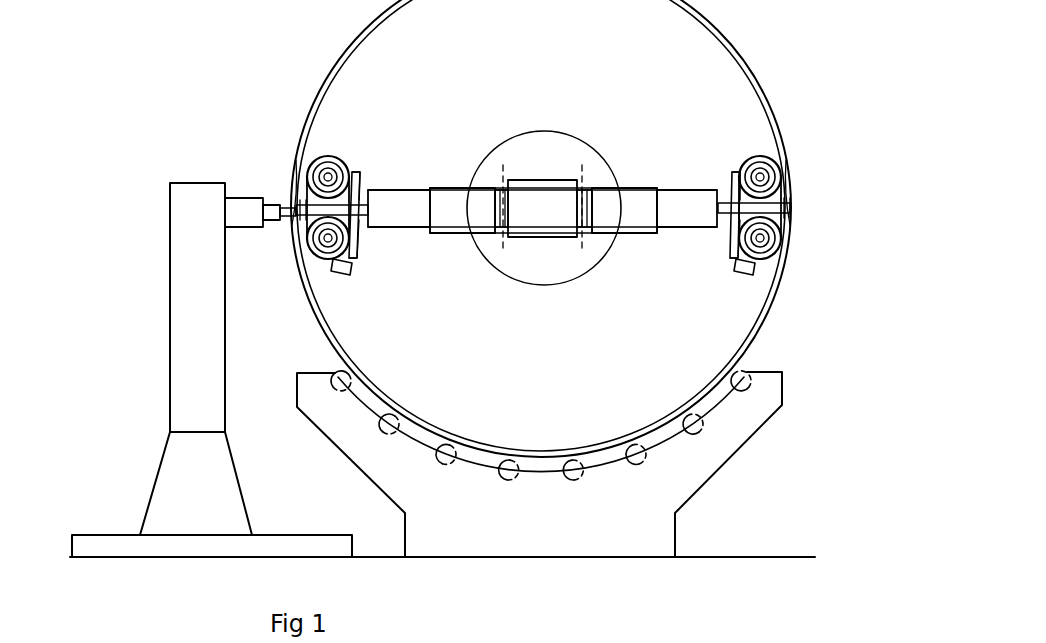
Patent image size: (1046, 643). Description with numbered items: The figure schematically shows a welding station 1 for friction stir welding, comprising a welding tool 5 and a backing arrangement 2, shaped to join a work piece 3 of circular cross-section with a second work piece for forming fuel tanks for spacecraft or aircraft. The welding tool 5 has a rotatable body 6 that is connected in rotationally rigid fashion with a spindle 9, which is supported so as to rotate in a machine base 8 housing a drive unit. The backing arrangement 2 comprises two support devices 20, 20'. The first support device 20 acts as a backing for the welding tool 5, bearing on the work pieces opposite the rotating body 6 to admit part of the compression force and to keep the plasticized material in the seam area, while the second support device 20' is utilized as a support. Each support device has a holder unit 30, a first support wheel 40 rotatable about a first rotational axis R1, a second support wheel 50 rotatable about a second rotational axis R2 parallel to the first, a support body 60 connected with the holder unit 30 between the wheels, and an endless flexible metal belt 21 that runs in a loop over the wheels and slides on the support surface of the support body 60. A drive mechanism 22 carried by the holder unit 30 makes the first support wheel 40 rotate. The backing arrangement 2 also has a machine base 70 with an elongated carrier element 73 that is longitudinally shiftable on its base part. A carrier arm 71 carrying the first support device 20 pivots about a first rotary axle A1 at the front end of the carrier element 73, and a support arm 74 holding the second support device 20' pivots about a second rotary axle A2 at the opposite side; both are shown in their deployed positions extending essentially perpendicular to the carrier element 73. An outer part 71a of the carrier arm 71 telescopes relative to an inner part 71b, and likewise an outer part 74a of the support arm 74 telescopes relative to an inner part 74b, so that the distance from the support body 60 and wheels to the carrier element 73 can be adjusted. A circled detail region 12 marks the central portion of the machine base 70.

The welding station 1 is at (268, 68).
The backing arrangement 2 is at (458, 132).
The work piece 3 is at (346, 64).
The welding tool 5 is at (261, 170).
The rotatable body 6 is at (300, 203).
The machine base 8 is at (180, 248).
The spindle 9 is at (270, 226).
The detail region 12 is at (524, 140).
The first support device 20 is at (361, 183).
The second support device 20' is at (740, 170).
The endless flexible metal belt 21 is at (298, 185).
The drive mechanism 22 is at (346, 275).
The holder unit 30 is at (372, 232).
The first support wheel 40 is at (350, 172).
The second support wheel 50 is at (360, 266).
The support body 60 is at (303, 232).
The machine base 70 is at (559, 157).
The carrier arm 71 is at (448, 164).
The outer part of carrier arm 71a is at (413, 224).
The inner part of carrier arm 71b is at (458, 230).
The carrier element 73 is at (543, 230).
The support arm 74 is at (653, 163).
The outer part of support arm 74a is at (667, 222).
The inner part of support arm 74b is at (627, 230).
The first rotary axle A1 is at (504, 250).
The second rotary axle A2 is at (583, 252).
The first rotational axis R1 is at (329, 175).
The second rotational axis R2 is at (328, 240).